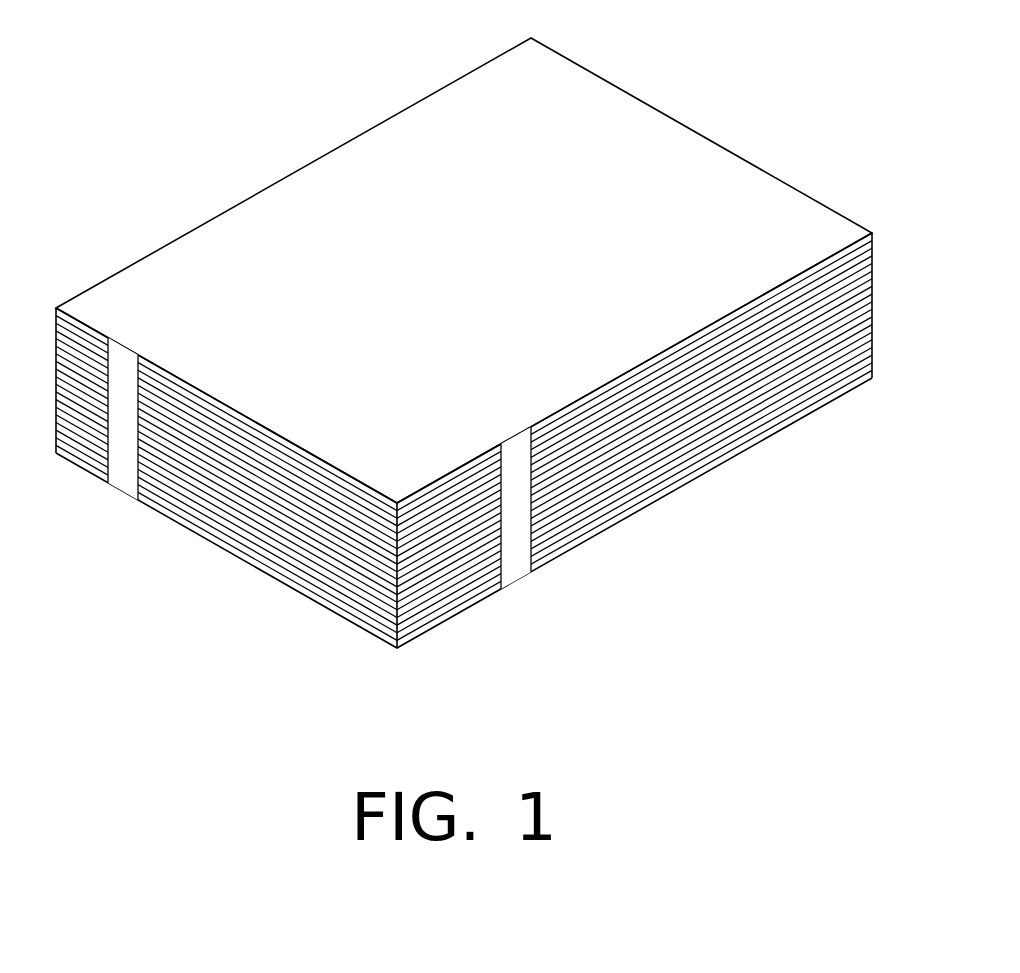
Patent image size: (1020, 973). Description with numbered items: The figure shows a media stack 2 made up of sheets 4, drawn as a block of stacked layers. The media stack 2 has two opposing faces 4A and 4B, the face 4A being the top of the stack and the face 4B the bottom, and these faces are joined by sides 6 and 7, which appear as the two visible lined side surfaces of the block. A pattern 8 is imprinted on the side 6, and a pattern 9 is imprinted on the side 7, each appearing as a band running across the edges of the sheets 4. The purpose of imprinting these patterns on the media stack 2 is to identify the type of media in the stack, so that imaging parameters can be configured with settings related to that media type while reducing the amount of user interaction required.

The media stack 2 is at (486, 340).
The sheets 4 is at (486, 414).
The face 4A is at (813, 218).
The face 4B is at (480, 513).
The side 6 is at (717, 418).
The side 7 is at (282, 553).
The pattern 8 is at (512, 557).
The pattern 9 is at (115, 472).